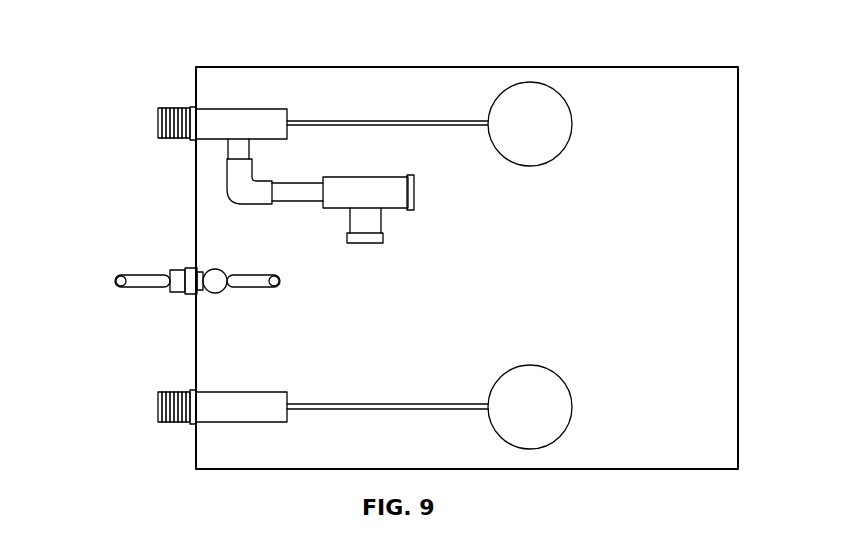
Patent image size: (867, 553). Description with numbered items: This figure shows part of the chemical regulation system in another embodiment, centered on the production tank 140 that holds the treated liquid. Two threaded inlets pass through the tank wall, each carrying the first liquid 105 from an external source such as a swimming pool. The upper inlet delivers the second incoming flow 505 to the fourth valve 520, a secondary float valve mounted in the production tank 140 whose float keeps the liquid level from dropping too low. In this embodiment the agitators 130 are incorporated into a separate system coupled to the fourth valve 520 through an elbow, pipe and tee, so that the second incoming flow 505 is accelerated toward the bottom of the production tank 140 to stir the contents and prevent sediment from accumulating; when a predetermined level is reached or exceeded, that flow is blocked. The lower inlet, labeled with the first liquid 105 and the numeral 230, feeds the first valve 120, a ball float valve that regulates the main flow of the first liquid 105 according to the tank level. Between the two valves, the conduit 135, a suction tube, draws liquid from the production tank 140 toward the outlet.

The first liquid 105 is at (119, 261).
The second incoming flow 505 is at (143, 124).
The lower threaded inlet fitting 230 is at (143, 406).
The fourth valve 520 is at (253, 117).
The agitators 130 is at (383, 183).
The conduit 135 is at (252, 278).
The first valve 120 is at (237, 392).
The production tank 140 is at (622, 469).